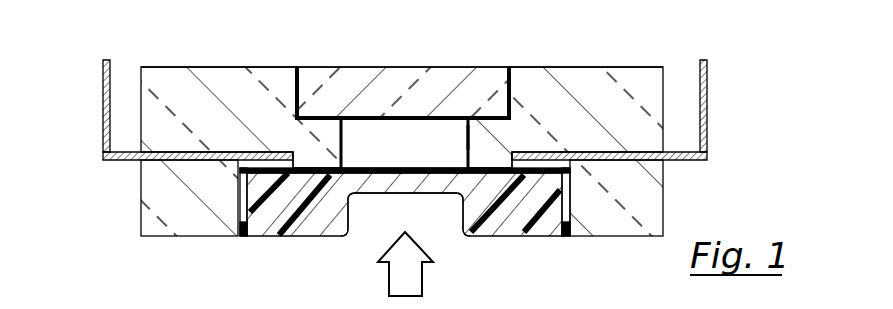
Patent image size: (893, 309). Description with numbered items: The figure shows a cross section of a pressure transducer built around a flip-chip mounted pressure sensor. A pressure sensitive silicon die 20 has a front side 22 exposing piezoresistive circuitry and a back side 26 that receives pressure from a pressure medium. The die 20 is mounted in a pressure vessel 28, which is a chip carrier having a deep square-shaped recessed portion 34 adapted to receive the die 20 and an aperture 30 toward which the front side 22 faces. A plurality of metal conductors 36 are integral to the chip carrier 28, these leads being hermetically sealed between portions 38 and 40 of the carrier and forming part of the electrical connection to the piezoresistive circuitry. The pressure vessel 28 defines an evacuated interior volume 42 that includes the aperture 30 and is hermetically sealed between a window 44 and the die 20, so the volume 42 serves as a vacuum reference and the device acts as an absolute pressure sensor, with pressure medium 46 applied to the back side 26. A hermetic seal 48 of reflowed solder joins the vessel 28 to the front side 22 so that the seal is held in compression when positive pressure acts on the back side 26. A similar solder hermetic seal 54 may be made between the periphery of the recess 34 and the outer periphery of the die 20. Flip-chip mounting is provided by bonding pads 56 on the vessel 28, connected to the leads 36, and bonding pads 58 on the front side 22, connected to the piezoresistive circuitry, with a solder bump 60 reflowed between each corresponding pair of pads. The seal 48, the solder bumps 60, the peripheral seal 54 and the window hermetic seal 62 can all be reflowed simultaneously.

The pressure sensitive silicon die 20 is at (548, 236).
The front side 22 is at (398, 170).
The back side 26 is at (420, 196).
The pressure vessel 28 is at (636, 56).
The aperture 30 is at (466, 137).
The recessed portion 34 is at (234, 200).
The metal conductors 36 is at (103, 97).
The portion of chip carrier 38 is at (187, 208).
The portion of chip carrier 40 is at (213, 127).
The evacuated interior volume 42 is at (418, 153).
The window 44 is at (425, 67).
The pressure medium 46 is at (405, 264).
The hermetic seal 48 is at (343, 148).
The solder hermetic seal 54 is at (243, 236).
The bonding pads 56 is at (333, 153).
The bonding pads 58 is at (305, 173).
The solder bump 60 is at (321, 190).
The window hermetic seal 62 is at (338, 117).